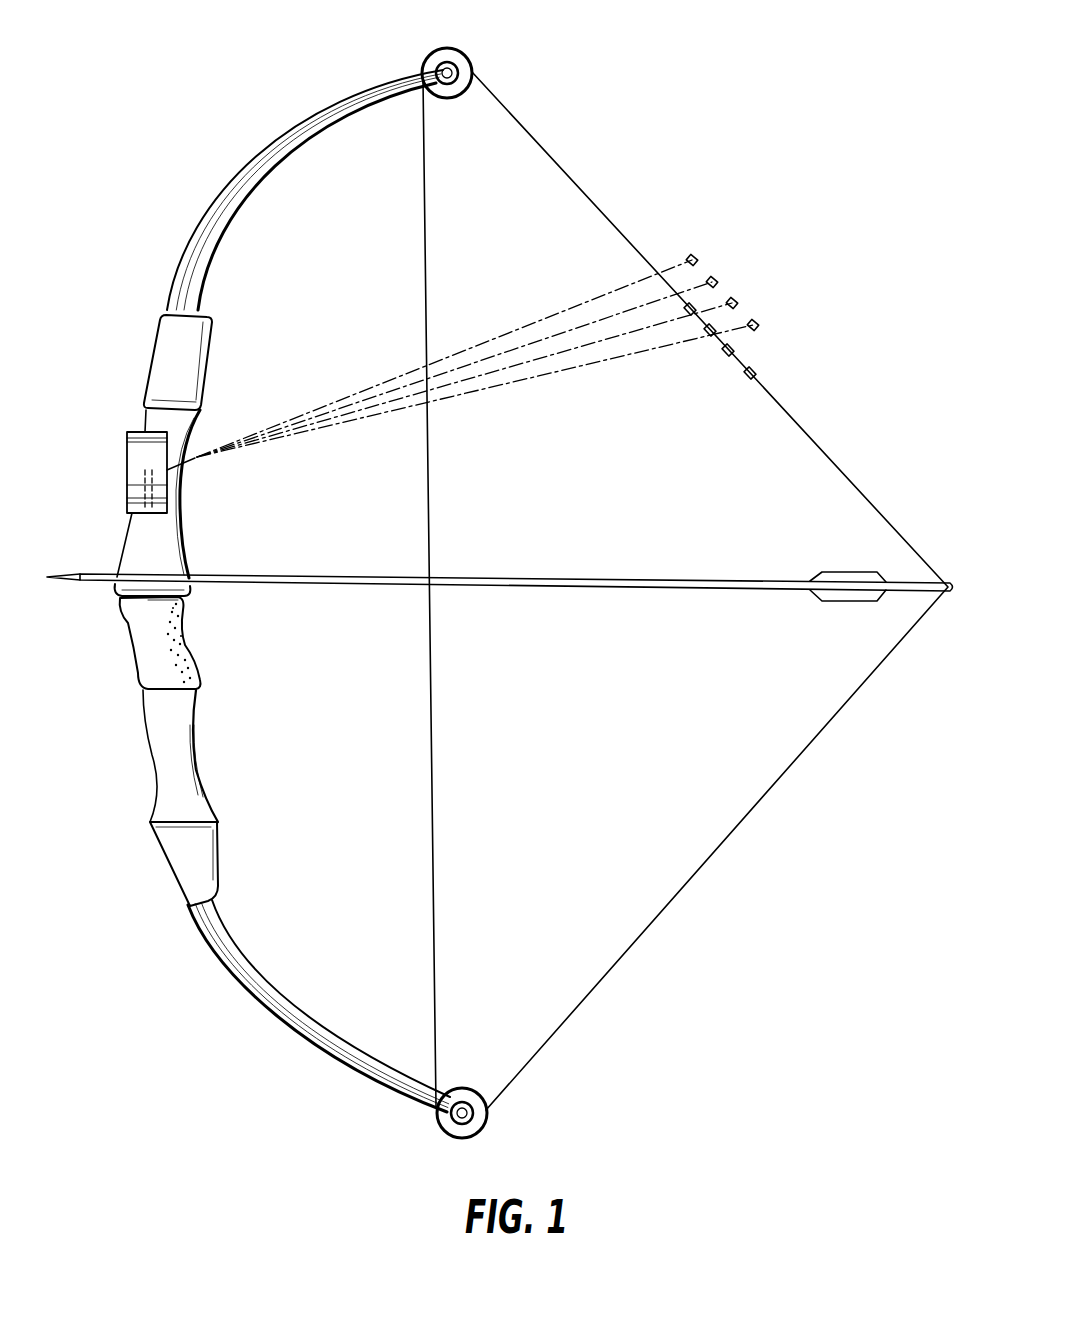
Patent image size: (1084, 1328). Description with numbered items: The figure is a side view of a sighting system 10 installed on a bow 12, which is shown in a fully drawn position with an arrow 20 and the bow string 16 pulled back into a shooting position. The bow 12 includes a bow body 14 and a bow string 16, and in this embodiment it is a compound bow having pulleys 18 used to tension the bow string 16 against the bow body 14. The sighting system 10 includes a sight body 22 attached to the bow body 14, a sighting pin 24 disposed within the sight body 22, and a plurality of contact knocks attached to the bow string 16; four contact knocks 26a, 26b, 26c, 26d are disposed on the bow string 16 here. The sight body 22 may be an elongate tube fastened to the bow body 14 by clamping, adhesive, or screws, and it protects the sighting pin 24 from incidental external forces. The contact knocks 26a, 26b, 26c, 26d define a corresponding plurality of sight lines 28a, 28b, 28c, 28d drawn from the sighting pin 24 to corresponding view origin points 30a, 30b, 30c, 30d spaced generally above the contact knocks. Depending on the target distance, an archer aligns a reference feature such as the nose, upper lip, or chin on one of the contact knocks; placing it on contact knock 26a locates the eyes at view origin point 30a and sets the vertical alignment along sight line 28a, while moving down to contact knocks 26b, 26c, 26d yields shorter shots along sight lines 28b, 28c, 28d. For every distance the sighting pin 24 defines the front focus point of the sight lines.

The sighting system 10 is at (351, 371).
The bow 12 is at (403, 76).
The bow body 14 is at (155, 352).
The bow string 16 is at (514, 120).
The pulleys 18 is at (466, 58).
The arrow 20 is at (527, 590).
The sight body 22 is at (130, 434).
The sighting pin 24 is at (150, 478).
The contact knock 26a is at (687, 312).
The contact knock 26b is at (707, 333).
The contact knock 26c is at (727, 354).
The contact knock 26d is at (751, 379).
The sight line 28a is at (527, 326).
The sight line 28b is at (580, 328).
The sight line 28c is at (469, 380).
The sight line 28d is at (507, 386).
The view origin point 30a is at (692, 254).
The view origin point 30b is at (716, 278).
The view origin point 30c is at (737, 300).
The view origin point 30d is at (758, 325).